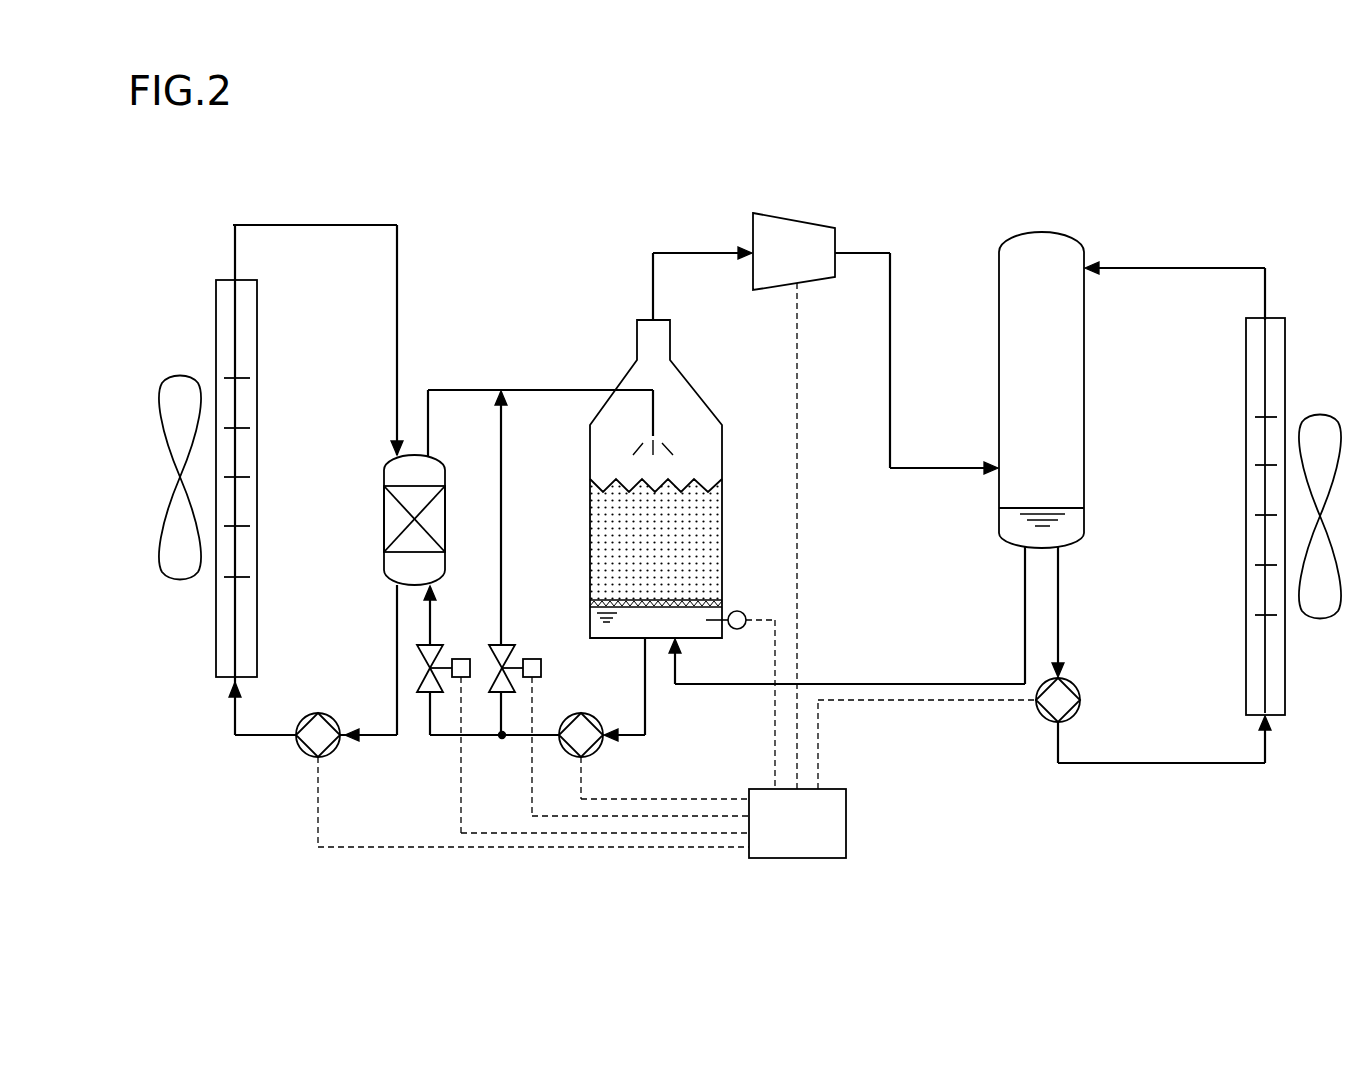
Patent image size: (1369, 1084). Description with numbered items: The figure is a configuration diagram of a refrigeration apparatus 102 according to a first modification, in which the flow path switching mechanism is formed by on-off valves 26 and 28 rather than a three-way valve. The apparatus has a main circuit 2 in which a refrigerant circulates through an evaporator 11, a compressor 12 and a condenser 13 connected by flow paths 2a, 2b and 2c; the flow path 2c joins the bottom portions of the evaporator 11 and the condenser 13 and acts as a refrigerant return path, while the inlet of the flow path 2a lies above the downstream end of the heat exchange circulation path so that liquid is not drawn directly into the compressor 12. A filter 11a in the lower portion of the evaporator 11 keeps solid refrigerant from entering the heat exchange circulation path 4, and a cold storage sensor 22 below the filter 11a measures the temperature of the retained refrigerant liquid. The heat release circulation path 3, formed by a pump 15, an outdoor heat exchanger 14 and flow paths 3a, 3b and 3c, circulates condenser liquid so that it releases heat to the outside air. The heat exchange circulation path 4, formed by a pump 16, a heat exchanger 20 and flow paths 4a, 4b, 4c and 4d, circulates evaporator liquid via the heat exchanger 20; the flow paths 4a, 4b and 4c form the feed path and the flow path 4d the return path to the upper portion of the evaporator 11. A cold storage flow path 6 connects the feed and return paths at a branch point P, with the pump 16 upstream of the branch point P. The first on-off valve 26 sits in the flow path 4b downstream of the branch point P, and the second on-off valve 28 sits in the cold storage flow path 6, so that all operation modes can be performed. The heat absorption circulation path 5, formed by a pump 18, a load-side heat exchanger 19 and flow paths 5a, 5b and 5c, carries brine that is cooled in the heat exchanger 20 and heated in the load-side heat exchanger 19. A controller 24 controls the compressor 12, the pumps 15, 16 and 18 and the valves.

The refrigeration apparatus 102 is at (1123, 133).
The main circuit 2 is at (866, 250).
The flow path 2a is at (702, 250).
The flow path 2b is at (940, 466).
The flow path 2c is at (890, 681).
The heat release circulation path 3 is at (1151, 266).
The flow path 3a is at (1060, 600).
The flow path 3b is at (1160, 765).
The flow path 3c is at (1213, 266).
The heat exchange circulation path 4 is at (468, 388).
The flow path 4a is at (647, 708).
The flow path 4b is at (477, 737).
The flow path 4c is at (433, 610).
The flow path 4d is at (553, 388).
The heat absorption circulation path 5 is at (296, 222).
The flow path 5a is at (375, 737).
The flow path 5b is at (270, 737).
The flow path 5c is at (358, 223).
The cold storage flow path 6 is at (503, 524).
The evaporator 11 is at (590, 455).
The filter 11a is at (700, 597).
The compressor 12 is at (797, 220).
The condenser 13 is at (1040, 231).
The outdoor heat exchanger 14 is at (1246, 490).
The pump 15 is at (1082, 700).
The pump 16 is at (598, 753).
The pump 18 is at (318, 712).
The load-side heat exchanger 19 is at (257, 338).
The heat exchanger 20 is at (384, 520).
The cold storage sensor 22 is at (740, 630).
The controller 24 is at (797, 860).
The first on-off valve 26 is at (441, 650).
The second on-off valve 28 is at (511, 650).
The branch point P is at (503, 740).